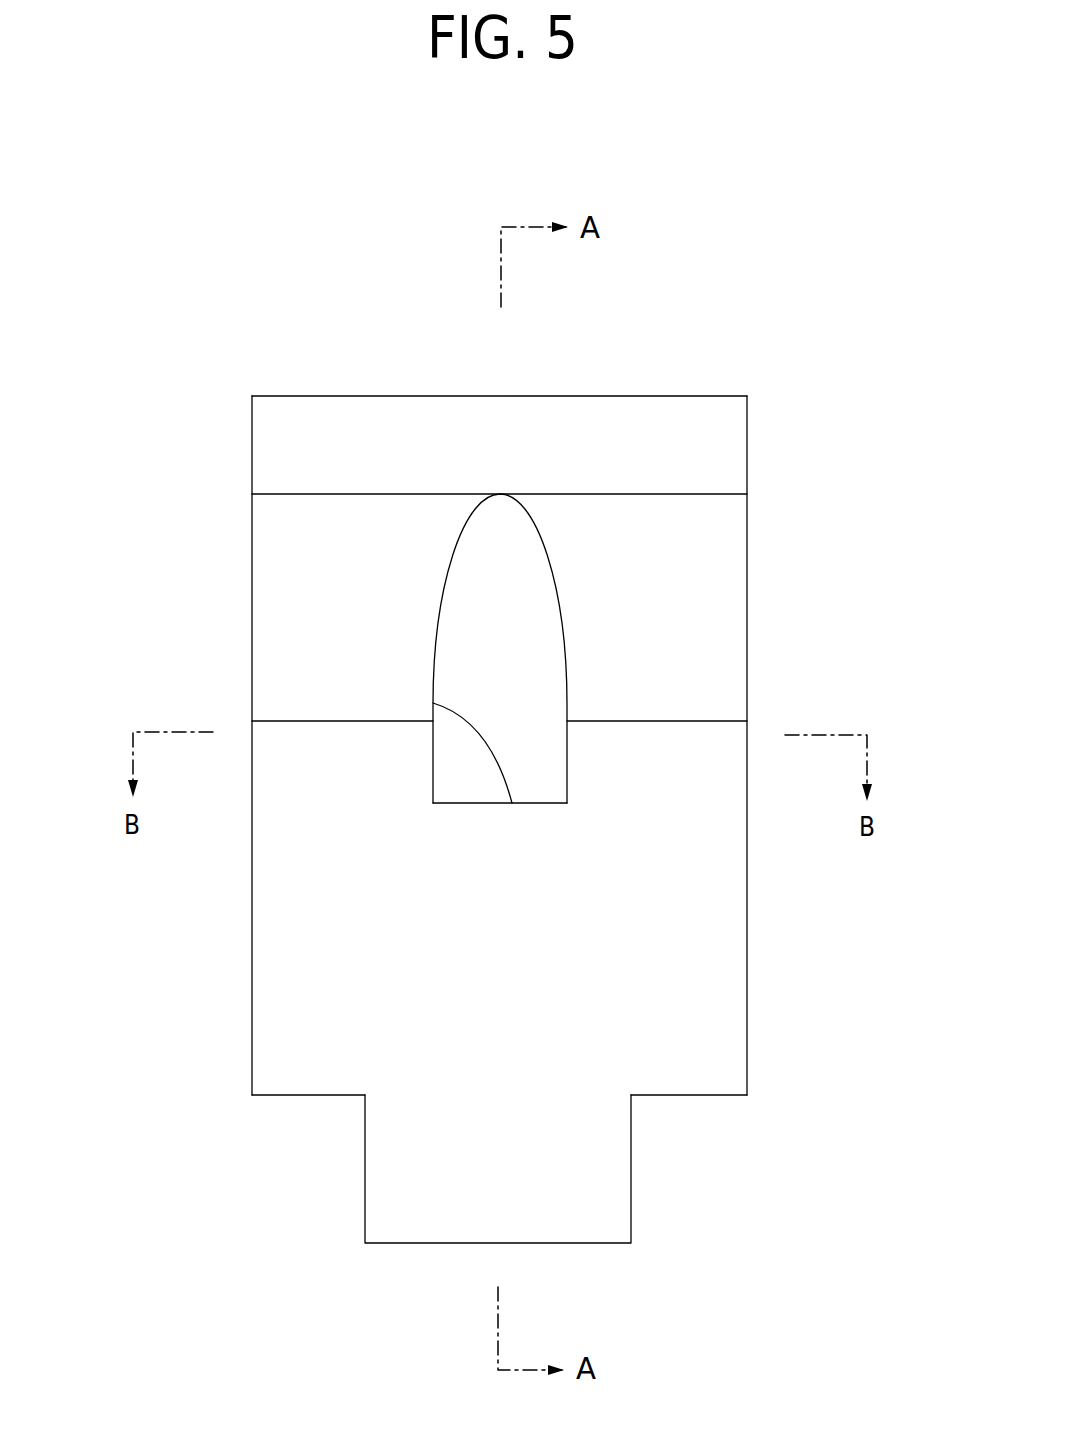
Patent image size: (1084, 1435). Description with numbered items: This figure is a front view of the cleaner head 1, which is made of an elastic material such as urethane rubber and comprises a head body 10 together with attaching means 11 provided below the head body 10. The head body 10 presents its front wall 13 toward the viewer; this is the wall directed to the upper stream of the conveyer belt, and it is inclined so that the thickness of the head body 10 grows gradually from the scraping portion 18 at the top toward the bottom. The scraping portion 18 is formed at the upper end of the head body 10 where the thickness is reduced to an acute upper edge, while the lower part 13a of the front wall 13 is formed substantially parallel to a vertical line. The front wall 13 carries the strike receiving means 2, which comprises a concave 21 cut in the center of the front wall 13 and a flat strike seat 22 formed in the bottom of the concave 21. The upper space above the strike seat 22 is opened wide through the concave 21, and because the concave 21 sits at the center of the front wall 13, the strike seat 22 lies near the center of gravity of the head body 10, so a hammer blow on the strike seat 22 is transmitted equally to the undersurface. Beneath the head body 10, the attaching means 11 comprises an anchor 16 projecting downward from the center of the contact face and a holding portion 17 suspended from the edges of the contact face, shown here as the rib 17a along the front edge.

The cleaner head 1 is at (314, 338).
The strike receiving means 2 is at (188, 570).
The head body 10 is at (249, 473).
The attaching means 11 is at (862, 1092).
The front wall 13 is at (718, 615).
The lower part of the front wall 13a is at (685, 937).
The anchor 16 is at (631, 1182).
The holding portion 17 is at (547, 1109).
The rib 17a is at (747, 1085).
The scraping portion 18 is at (513, 395).
The concave 21 is at (452, 600).
The strike seat 22 is at (433, 703).